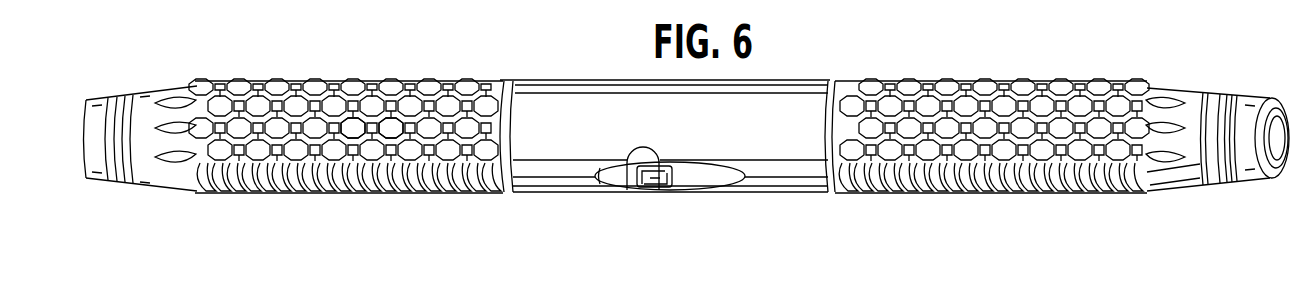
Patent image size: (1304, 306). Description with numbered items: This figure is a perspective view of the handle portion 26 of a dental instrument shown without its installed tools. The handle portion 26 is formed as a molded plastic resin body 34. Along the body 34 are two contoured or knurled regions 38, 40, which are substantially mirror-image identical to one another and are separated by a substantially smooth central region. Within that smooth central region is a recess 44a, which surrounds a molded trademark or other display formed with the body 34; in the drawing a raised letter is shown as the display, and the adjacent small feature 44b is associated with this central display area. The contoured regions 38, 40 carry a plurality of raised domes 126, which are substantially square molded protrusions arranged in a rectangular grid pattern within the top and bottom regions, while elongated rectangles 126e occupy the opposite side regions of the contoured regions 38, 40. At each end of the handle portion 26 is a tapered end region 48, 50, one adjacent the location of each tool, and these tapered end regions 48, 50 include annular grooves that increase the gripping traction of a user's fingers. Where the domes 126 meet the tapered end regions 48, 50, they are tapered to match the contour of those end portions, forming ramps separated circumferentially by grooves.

The handle portion 26 is at (356, 139).
The molded plastic resin body 34 is at (987, 114).
The contoured region 38 is at (1053, 83).
The contoured region 40 is at (345, 140).
The recess 44a is at (694, 165).
The button 44b is at (627, 163).
The tapered end region 48 is at (1193, 87).
The tapered end region 50 is at (170, 88).
The raised domes 126 is at (372, 145).
The elongated rectangles 126e is at (497, 185).